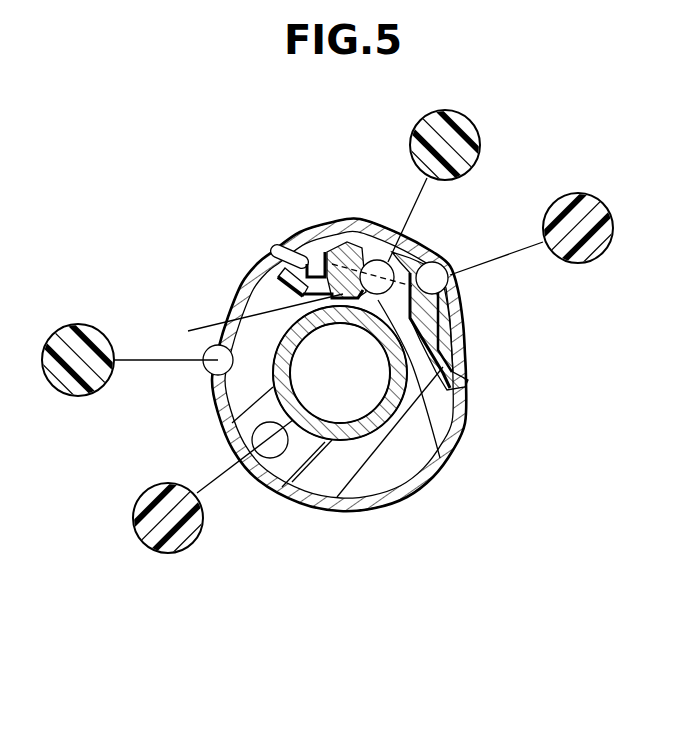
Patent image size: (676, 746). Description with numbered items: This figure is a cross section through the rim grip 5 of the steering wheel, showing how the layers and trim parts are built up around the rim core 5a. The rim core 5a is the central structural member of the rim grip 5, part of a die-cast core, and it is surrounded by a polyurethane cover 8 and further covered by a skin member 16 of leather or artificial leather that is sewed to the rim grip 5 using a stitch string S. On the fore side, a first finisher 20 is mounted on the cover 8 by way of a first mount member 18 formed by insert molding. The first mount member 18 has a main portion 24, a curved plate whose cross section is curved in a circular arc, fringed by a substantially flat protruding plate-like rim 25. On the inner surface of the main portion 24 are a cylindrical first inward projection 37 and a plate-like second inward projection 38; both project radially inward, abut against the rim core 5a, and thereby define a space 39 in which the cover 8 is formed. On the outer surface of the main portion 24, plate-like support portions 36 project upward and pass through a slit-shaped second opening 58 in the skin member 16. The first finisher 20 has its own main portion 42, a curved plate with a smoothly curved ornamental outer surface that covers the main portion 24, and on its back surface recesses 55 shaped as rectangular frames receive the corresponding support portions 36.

The rim grip 5 is at (235, 183).
The rim core 5a is at (278, 480).
The cover 8 is at (337, 478).
The skin member 16 is at (250, 288).
The first mount member 18 is at (471, 393).
The first finisher 20 is at (428, 245).
The main portion 24 is at (452, 290).
The rim 25 is at (469, 380).
The support portion 36 is at (373, 258).
The first inward projection 37 is at (173, 346).
The second inward projection 38 is at (453, 457).
The space 39 is at (395, 393).
The main portion 42 is at (325, 240).
The recess 55 is at (318, 270).
The second opening 58 is at (466, 333).
The stitch string S is at (212, 385).